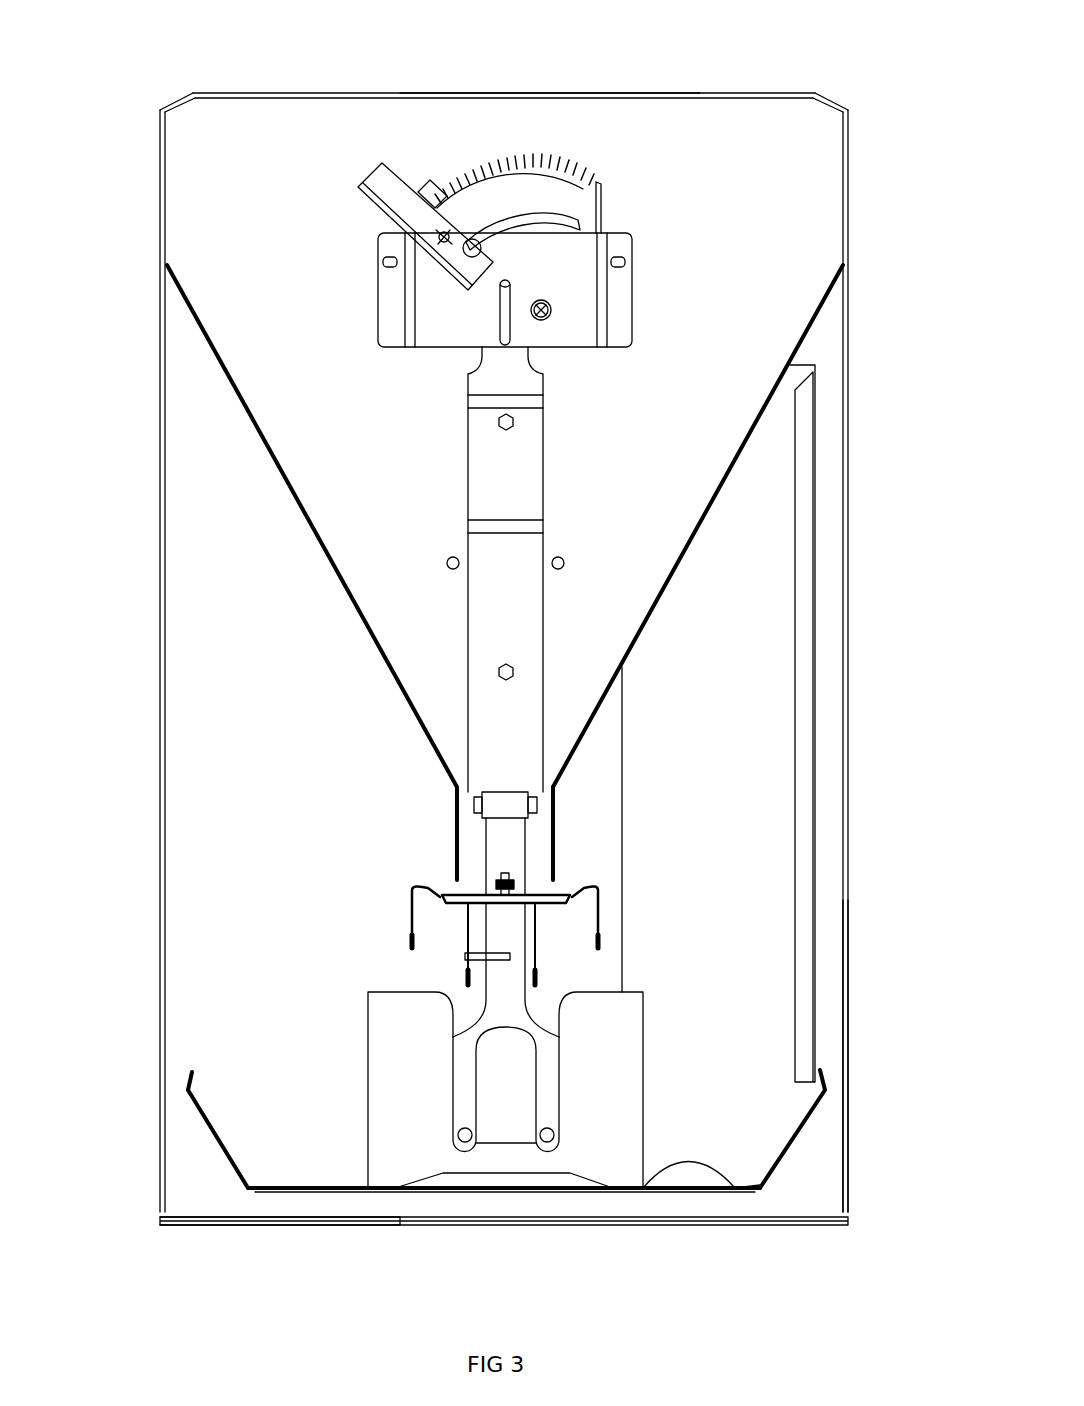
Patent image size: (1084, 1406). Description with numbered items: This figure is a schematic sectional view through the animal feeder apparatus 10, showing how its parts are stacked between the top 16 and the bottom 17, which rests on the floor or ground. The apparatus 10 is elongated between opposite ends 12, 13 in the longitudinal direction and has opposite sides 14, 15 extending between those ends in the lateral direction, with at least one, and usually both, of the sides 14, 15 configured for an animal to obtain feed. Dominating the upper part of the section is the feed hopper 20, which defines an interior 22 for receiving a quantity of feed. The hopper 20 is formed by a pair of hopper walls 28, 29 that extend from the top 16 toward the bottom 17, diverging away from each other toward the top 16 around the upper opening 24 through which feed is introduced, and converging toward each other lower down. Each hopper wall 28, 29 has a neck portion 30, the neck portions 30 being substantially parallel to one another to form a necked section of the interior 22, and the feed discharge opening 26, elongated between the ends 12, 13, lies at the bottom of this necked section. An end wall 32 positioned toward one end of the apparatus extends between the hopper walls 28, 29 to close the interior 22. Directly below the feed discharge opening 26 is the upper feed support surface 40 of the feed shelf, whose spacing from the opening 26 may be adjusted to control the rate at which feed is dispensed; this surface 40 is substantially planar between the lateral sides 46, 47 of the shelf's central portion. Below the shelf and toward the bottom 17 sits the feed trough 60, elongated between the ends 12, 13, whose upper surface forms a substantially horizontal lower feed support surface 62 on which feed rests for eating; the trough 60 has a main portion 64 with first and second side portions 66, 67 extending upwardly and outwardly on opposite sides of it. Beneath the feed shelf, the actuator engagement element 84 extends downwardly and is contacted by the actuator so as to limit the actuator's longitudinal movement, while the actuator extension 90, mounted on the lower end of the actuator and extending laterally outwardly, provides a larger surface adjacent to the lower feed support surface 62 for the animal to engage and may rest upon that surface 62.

The animal feeder apparatus 10 is at (790, 73).
The end 12 is at (418, 80).
The end 13 is at (723, 1243).
The side 14 is at (140, 1116).
The side 15 is at (888, 1092).
The top 16 is at (860, 101).
The bottom 17 is at (186, 1245).
The feed hopper 20 is at (772, 467).
The interior 22 is at (691, 400).
The upper opening 24 is at (637, 136).
The feed discharge opening 26 is at (557, 878).
The hopper wall 28 is at (320, 545).
The hopper wall 29 is at (674, 578).
The neck portion 30 is at (557, 815).
The end wall 32 is at (238, 172).
The upper feed support surface 40 is at (441, 893).
The lateral side 46 is at (409, 946).
The lateral side 47 is at (603, 946).
The feed trough 60 is at (206, 1155).
The lower feed support surface 62 is at (283, 1188).
The main portion 64 is at (258, 1190).
The first side portion 66 is at (200, 1112).
The second side portion 67 is at (800, 1120).
The actuator engagement element 84 is at (505, 985).
The actuator extension 90 is at (423, 1143).